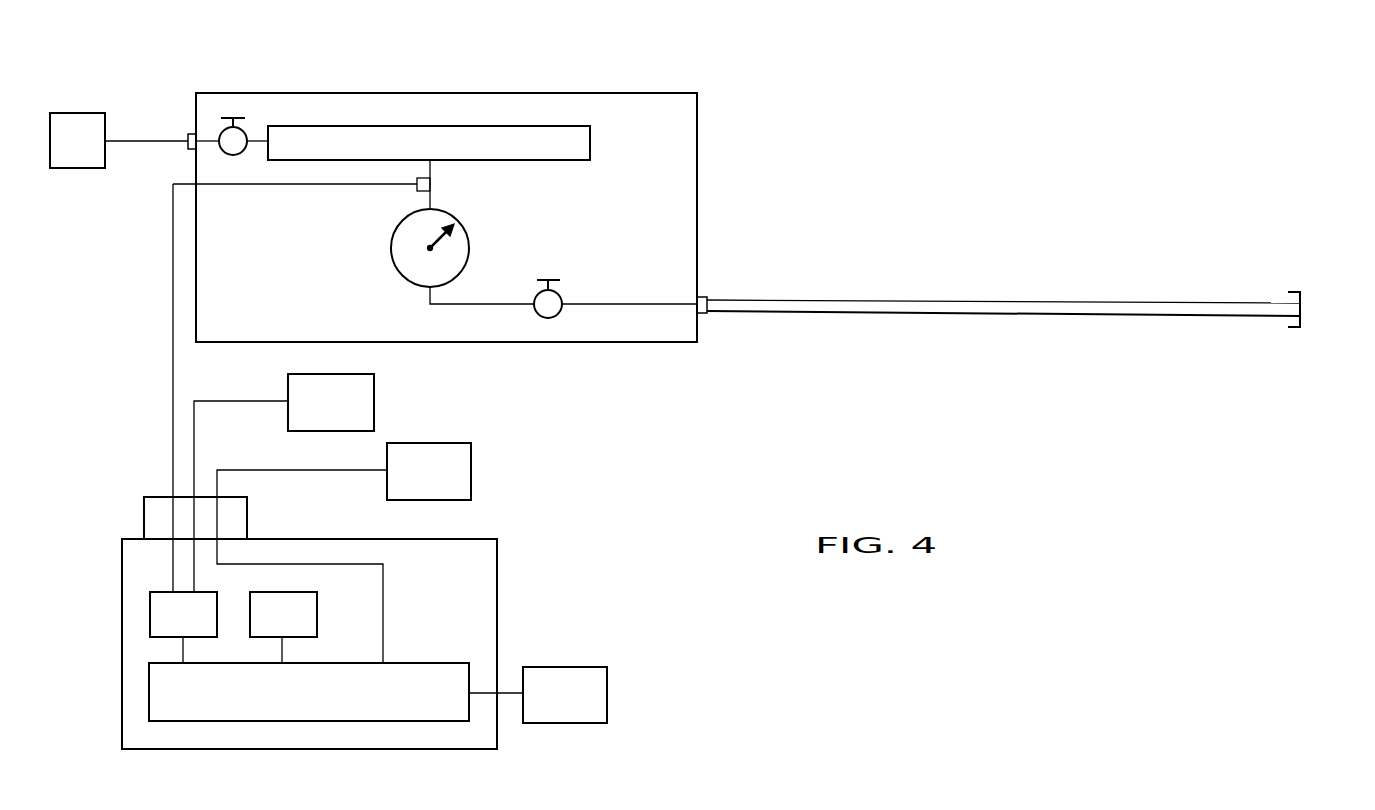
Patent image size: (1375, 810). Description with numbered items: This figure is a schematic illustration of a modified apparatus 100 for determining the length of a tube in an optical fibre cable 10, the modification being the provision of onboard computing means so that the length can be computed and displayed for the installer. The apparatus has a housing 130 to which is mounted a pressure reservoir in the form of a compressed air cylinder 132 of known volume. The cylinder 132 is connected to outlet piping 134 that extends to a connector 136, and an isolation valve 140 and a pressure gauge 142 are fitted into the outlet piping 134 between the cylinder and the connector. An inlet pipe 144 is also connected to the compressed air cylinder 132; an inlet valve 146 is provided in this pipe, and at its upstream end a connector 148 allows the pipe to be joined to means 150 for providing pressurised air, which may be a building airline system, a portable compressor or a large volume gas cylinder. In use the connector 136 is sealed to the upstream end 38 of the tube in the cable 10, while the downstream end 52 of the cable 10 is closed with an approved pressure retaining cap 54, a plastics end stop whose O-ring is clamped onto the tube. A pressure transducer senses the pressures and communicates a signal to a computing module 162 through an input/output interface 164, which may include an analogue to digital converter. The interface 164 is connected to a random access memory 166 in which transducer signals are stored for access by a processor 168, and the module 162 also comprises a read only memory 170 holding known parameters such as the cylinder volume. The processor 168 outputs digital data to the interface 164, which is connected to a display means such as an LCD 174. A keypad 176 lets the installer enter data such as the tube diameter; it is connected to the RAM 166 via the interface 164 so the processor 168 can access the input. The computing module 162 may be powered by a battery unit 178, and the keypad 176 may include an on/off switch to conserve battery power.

The optical fibre cable 10 is at (1000, 300).
The upstream end 38 is at (721, 321).
The downstream end 52 is at (1283, 321).
The pressure retaining cap 54 is at (1302, 308).
The modified apparatus 100 is at (738, 134).
The housing 130 is at (668, 93).
The compressed air cylinder 132 is at (562, 161).
The outlet piping 134 is at (432, 200).
The connector 136 is at (705, 297).
The isolation valve 140 is at (548, 318).
The pressure gauge 142 is at (391, 247).
The inlet pipe 144 is at (211, 136).
The inlet valve 146 is at (249, 132).
The connector 148 is at (190, 133).
The means for providing pressurised air 150 is at (119, 140).
The computing module 162 is at (108, 560).
The input/output interface 164 is at (195, 518).
The random access memory 166 is at (183, 627).
The processor 168 is at (309, 692).
The read only memory 170 is at (283, 627).
The LCD 174 is at (344, 553).
The keypad 176 is at (284, 483).
The battery unit 178 is at (538, 695).